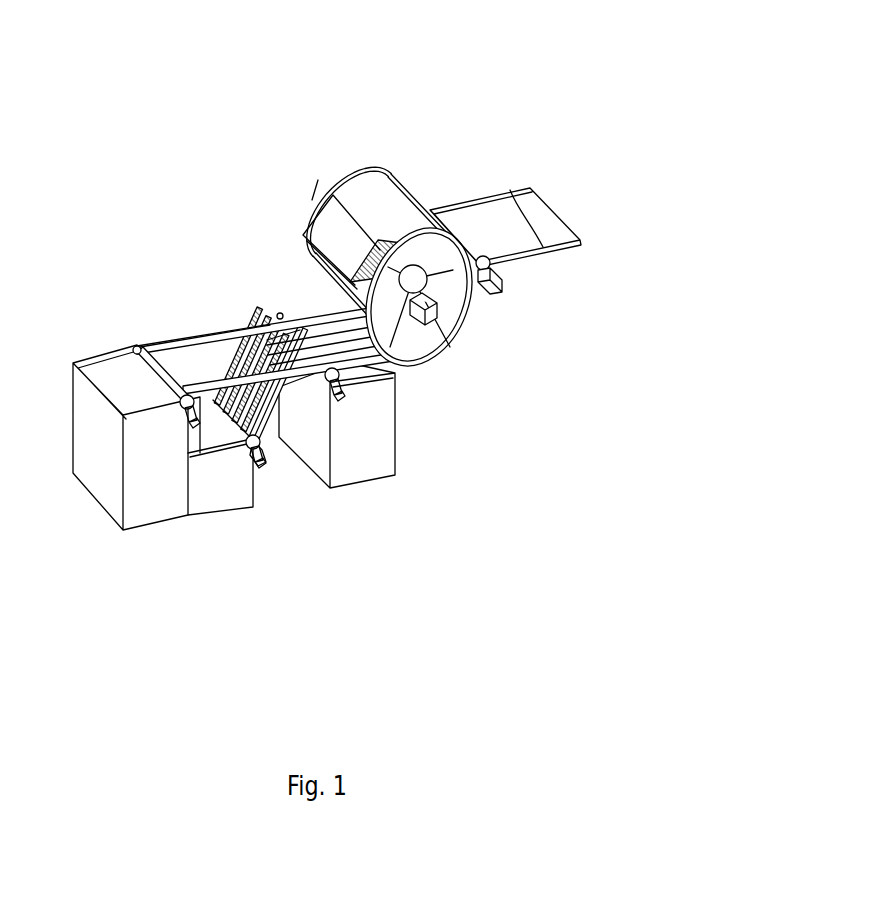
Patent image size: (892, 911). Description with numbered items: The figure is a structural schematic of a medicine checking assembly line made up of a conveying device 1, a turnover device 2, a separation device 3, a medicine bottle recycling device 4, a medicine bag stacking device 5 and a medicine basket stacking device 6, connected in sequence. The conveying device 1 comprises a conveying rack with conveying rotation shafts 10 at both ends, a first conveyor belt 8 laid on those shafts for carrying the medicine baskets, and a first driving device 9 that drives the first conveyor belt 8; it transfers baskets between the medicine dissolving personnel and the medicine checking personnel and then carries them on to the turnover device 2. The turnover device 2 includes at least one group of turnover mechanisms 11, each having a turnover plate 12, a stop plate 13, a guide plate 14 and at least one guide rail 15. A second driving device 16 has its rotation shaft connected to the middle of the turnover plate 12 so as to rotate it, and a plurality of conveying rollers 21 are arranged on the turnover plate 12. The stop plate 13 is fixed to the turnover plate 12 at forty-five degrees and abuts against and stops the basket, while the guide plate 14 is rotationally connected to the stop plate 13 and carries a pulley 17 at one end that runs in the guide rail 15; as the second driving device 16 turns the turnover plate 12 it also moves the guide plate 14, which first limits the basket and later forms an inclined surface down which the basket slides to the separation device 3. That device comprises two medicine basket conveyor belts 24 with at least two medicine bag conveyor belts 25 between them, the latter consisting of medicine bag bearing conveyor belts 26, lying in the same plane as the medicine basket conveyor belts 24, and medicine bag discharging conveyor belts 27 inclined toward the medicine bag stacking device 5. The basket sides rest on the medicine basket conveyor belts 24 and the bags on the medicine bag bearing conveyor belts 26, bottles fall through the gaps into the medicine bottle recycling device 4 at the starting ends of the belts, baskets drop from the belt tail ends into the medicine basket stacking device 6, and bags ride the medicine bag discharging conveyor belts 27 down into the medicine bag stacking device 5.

The conveying device 1 is at (524, 160).
The turnover device 2 is at (258, 190).
The separation device 3 is at (108, 295).
The medicine bottle recycling device 4 is at (358, 473).
The medicine bag stacking device 5 is at (223, 493).
The medicine basket stacking device 6 is at (163, 497).
The first conveyor belt 8 is at (543, 250).
The first driving device 9 is at (500, 283).
The conveying rotation shafts 10 is at (578, 243).
The turnover mechanism 11 is at (423, 219).
The turnover plate 12 is at (358, 270).
The stop plate 13 is at (317, 183).
The guide plate 14 is at (393, 168).
The guide rail 15 is at (387, 217).
The second driving device 16 is at (432, 323).
The pulley 17 is at (392, 180).
The conveying rollers 21 is at (427, 275).
The medicine basket conveyor belts 24 is at (353, 357).
The medicine bag conveyor belts 25 is at (240, 208).
The medicine bag bearing conveyor belts 26 is at (317, 337).
The medicine bag discharging conveyor belts 27 is at (273, 350).